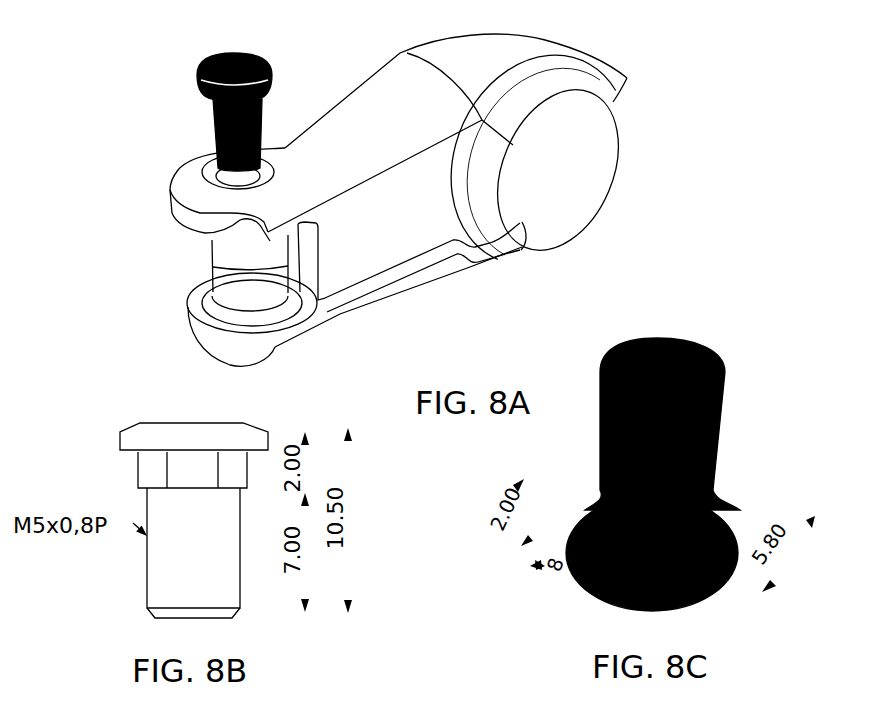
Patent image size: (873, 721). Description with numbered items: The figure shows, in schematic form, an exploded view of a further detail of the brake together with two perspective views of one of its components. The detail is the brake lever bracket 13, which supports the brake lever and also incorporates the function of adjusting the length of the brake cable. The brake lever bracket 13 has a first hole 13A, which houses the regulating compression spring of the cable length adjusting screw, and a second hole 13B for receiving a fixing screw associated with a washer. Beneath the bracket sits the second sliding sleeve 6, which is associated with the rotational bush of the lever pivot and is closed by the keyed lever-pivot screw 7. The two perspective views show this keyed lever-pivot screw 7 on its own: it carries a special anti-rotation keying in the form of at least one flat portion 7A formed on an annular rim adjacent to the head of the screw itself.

In FIG. 8A, the second sliding sleeve 6 is at (233, 255).
In FIG. 8A, the keyed lever-pivot screw 7 is at (224, 53).
In FIG. 8B, the keyed lever-pivot screw 7 is at (128, 429).
In FIG. 8C, the keyed lever-pivot screw 7 is at (686, 341).
In FIG. 8B, the flat portion 7A is at (189, 457).
In FIG. 8A, the brake lever bracket 13 is at (582, 66).
In FIG. 8A, the first hole 13A is at (560, 175).
In FIG. 8A, the second hole 13B is at (224, 169).